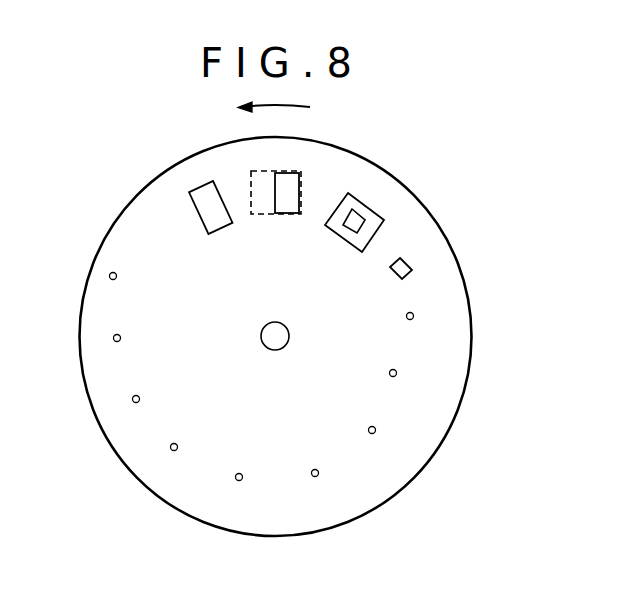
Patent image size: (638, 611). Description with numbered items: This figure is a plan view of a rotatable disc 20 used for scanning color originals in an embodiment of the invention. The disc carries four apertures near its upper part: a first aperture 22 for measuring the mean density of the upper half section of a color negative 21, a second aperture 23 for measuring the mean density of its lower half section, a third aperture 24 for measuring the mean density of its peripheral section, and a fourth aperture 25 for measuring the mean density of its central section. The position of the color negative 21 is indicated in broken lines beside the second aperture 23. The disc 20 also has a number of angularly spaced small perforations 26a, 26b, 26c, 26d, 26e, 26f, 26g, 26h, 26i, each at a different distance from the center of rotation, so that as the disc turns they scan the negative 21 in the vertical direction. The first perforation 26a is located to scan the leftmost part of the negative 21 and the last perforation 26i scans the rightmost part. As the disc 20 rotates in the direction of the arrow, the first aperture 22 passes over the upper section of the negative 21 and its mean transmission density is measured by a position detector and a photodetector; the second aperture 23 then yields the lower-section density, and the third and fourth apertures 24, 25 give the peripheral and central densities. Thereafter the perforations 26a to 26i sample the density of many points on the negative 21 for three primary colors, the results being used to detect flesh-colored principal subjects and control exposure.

The rotatable disc 20 is at (454, 430).
The color negative 21 is at (265, 214).
The first aperture 22 is at (203, 196).
The second aperture 23 is at (288, 178).
The third aperture 24 is at (378, 215).
The fourth aperture 25 is at (412, 266).
The first perforation 26a is at (414, 316).
The small perforation 26b is at (396, 376).
The small perforation 26c is at (372, 434).
The small perforation 26d is at (315, 477).
The small perforation 26e is at (239, 481).
The small perforation 26f is at (173, 451).
The small perforation 26g is at (133, 401).
The small perforation 26h is at (113, 338).
The last perforation 26i is at (109, 276).